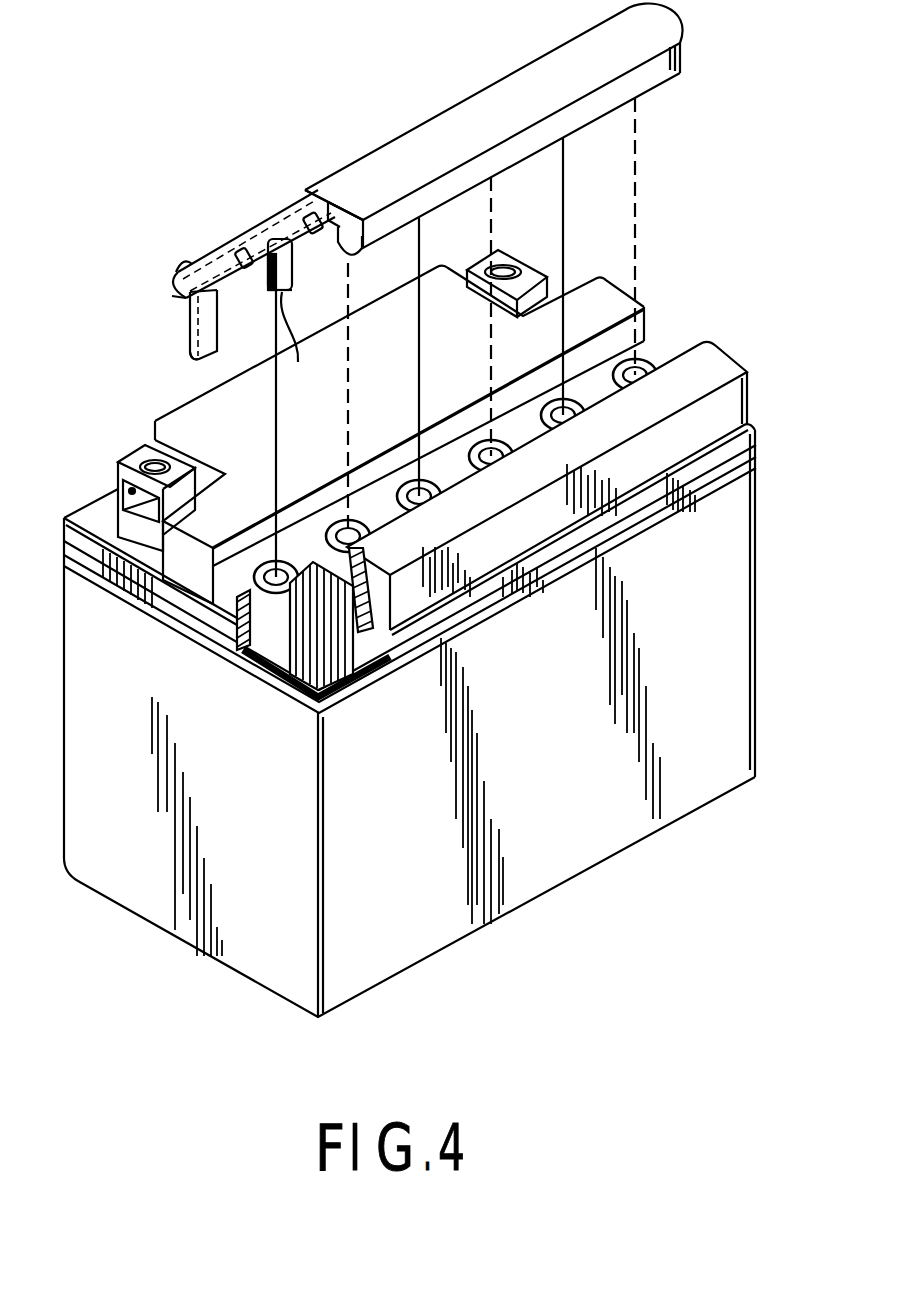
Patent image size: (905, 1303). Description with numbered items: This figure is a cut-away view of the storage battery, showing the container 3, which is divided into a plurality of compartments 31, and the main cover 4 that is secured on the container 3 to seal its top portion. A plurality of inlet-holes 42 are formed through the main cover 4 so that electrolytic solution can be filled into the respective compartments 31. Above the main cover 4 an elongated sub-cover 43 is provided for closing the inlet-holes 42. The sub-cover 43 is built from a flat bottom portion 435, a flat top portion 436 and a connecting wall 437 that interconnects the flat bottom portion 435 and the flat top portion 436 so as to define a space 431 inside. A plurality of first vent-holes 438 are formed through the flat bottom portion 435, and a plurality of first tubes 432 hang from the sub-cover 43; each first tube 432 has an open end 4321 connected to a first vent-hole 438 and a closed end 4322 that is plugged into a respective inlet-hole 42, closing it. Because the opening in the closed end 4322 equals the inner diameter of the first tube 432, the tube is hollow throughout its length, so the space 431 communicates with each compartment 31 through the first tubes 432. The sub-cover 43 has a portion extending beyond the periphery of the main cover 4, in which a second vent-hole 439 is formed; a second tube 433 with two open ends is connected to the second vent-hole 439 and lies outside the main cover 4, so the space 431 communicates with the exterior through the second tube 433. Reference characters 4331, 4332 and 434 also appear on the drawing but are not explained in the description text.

The container 3 is at (178, 922).
The compartments 31 is at (290, 652).
The main cover 4 is at (178, 425).
The inlet-holes 42 is at (492, 452).
The sub-cover 43 is at (350, 173).
The space 431 is at (330, 210).
The first tubes 432 is at (352, 260).
The open end 4321 is at (298, 313).
The closed end 4322 is at (298, 362).
The second tube 433 is at (190, 335).
The tab fold line 4331 is at (190, 318).
The rounded tab tip 4332 is at (203, 360).
The rivet post 434 is at (305, 225).
The flat bottom portion 435 is at (336, 216).
The flat top portion 436 is at (185, 262).
The connecting wall 437 is at (170, 302).
The first vent-holes 438 is at (240, 262).
The second vent-hole 439 is at (172, 292).